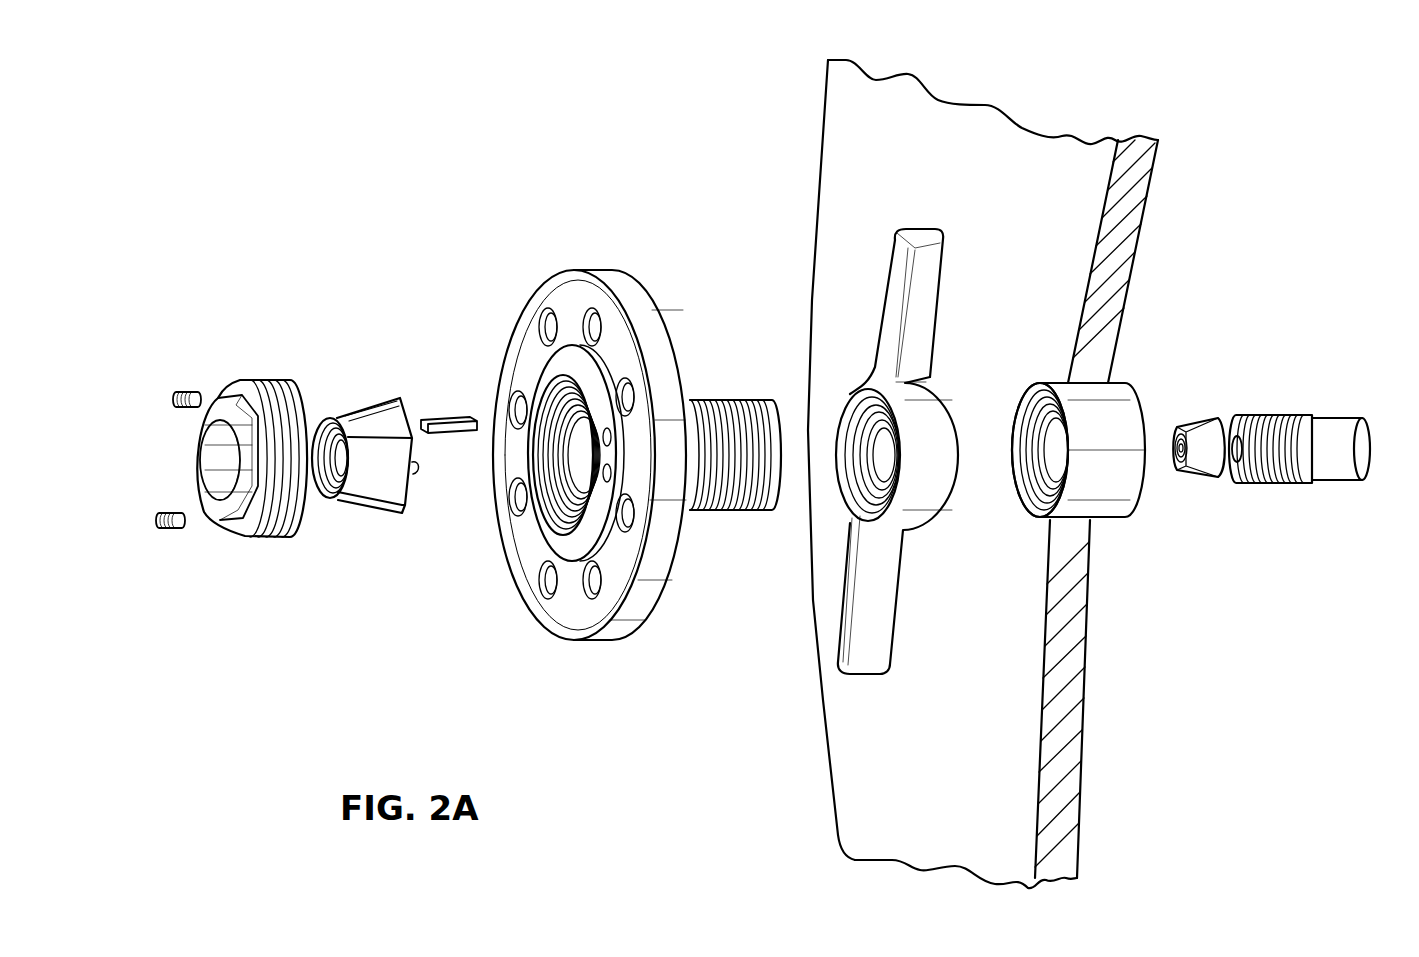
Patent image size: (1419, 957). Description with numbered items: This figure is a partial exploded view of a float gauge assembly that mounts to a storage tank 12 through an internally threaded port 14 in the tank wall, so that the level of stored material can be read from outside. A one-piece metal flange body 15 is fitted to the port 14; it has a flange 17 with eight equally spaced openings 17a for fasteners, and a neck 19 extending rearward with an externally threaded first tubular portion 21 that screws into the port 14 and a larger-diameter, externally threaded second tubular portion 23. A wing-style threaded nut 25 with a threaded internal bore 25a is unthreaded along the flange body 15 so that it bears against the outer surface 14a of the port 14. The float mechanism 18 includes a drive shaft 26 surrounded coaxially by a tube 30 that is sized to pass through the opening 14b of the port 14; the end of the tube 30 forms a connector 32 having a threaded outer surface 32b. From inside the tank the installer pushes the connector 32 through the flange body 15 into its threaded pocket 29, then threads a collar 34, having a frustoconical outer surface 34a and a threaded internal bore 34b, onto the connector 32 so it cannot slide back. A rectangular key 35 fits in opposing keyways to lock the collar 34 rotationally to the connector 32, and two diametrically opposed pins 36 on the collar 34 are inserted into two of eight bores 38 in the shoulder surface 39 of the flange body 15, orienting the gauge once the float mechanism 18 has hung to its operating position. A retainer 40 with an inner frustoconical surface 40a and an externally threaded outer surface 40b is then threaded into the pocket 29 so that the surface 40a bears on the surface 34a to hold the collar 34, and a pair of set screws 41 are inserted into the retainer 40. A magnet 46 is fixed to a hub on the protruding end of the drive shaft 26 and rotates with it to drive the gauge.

The storage tank 12 is at (1067, 727).
The internally threaded port 14 is at (1094, 487).
The outer surface of the port 14a is at (1035, 515).
The opening in the port 14b is at (1030, 460).
The flange body 15 is at (613, 442).
The flange 17 is at (617, 630).
The circumferentially spaced openings 17a is at (587, 600).
The float mechanism 18 is at (1304, 454).
The neck 19 is at (735, 438).
The first tubular portion 21 is at (730, 398).
The second tubular portion 23 is at (698, 512).
The threaded nut 25 is at (920, 232).
The threaded internal bore 25a is at (860, 432).
The drive shaft 26 is at (1240, 445).
The threaded pocket 29 is at (560, 530).
The tube 30 is at (1330, 476).
The connector 32 is at (1277, 475).
The threaded outer surface 32b is at (1290, 462).
The collar 34 is at (385, 469).
The frustoconical outer surface 34a is at (383, 488).
The threaded internal bore 34b is at (333, 440).
The key 35 is at (440, 420).
The pins 36 is at (418, 478).
The bores 38 is at (605, 437).
The shoulder surface 39 is at (607, 453).
The retainer 40 is at (228, 503).
The inner frustoconical surface 40a is at (215, 465).
The externally threaded outer surface 40b is at (283, 518).
The set screws 41 is at (185, 392).
The magnet 46 is at (1200, 428).